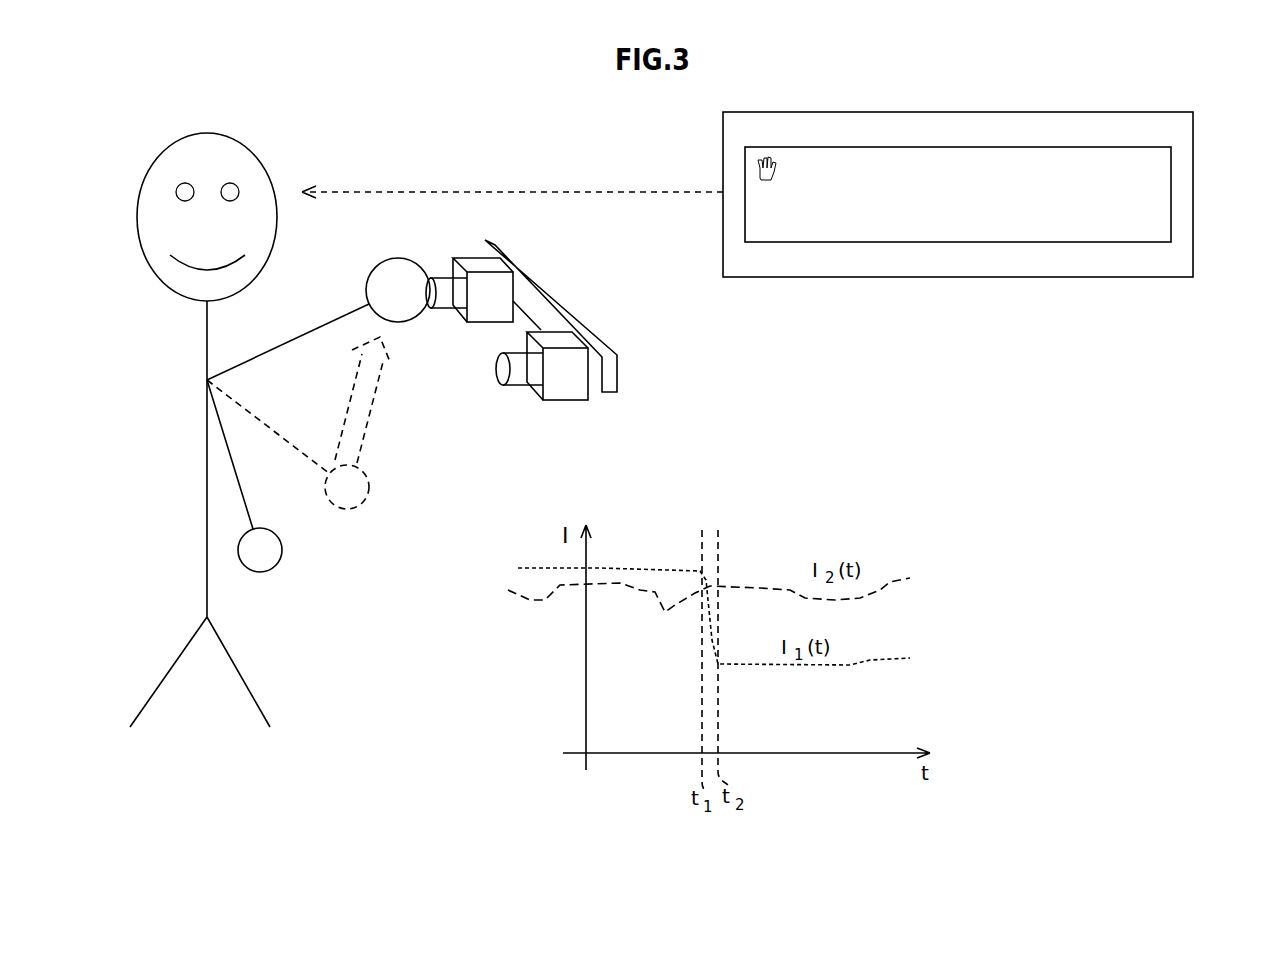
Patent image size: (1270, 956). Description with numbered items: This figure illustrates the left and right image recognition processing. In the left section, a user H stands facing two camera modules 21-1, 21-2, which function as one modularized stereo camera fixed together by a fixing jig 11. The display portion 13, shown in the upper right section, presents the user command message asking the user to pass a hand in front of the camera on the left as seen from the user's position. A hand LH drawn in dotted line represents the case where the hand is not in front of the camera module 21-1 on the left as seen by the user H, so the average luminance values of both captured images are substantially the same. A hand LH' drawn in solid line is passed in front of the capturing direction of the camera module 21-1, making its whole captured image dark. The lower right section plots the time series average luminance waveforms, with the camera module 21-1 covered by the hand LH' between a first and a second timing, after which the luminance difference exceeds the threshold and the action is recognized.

The user H is at (207, 133).
The hand LH is at (298, 423).
The hand LH' is at (358, 297).
The camera module 21-1 is at (473, 255).
The camera module 21-2 is at (567, 401).
The fixing jig 11 is at (544, 280).
The display portion 13 is at (1193, 197).